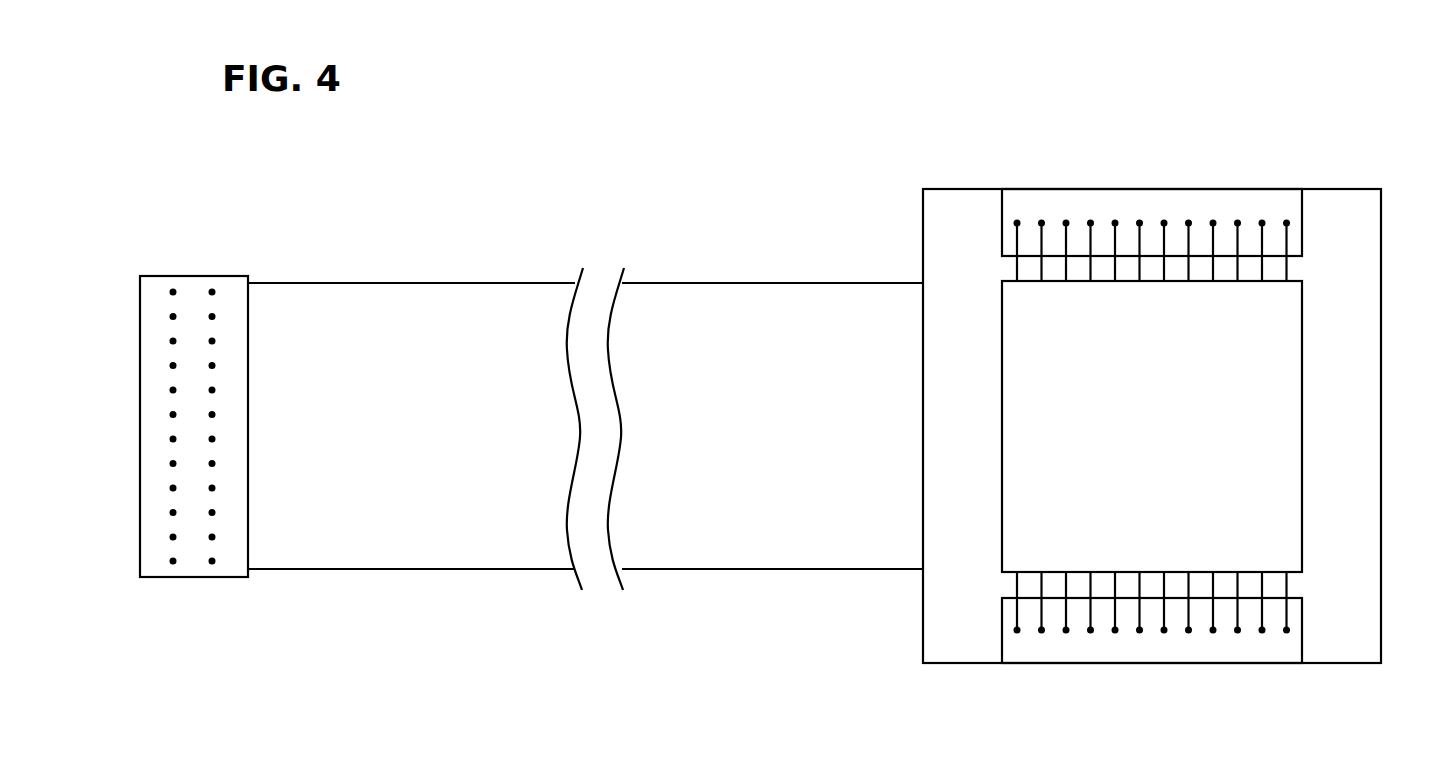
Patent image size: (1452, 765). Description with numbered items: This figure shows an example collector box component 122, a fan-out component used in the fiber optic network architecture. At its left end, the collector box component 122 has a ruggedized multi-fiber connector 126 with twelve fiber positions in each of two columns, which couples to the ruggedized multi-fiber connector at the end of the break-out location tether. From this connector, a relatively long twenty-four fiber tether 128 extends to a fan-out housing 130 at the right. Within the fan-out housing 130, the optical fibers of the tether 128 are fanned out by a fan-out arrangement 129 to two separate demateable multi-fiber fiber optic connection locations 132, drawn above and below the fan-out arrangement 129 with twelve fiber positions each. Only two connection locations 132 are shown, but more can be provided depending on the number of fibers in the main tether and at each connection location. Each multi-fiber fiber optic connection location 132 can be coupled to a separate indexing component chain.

The collector box component 122 is at (530, 205).
The ruggedized multi-fiber connector 126 is at (192, 577).
The tether 128 is at (743, 283).
The fan-out arrangement 129 is at (1302, 473).
The fan-out housing 130 is at (1381, 275).
The demateable multi-fiber fiber optic connection locations 132 is at (1302, 222).